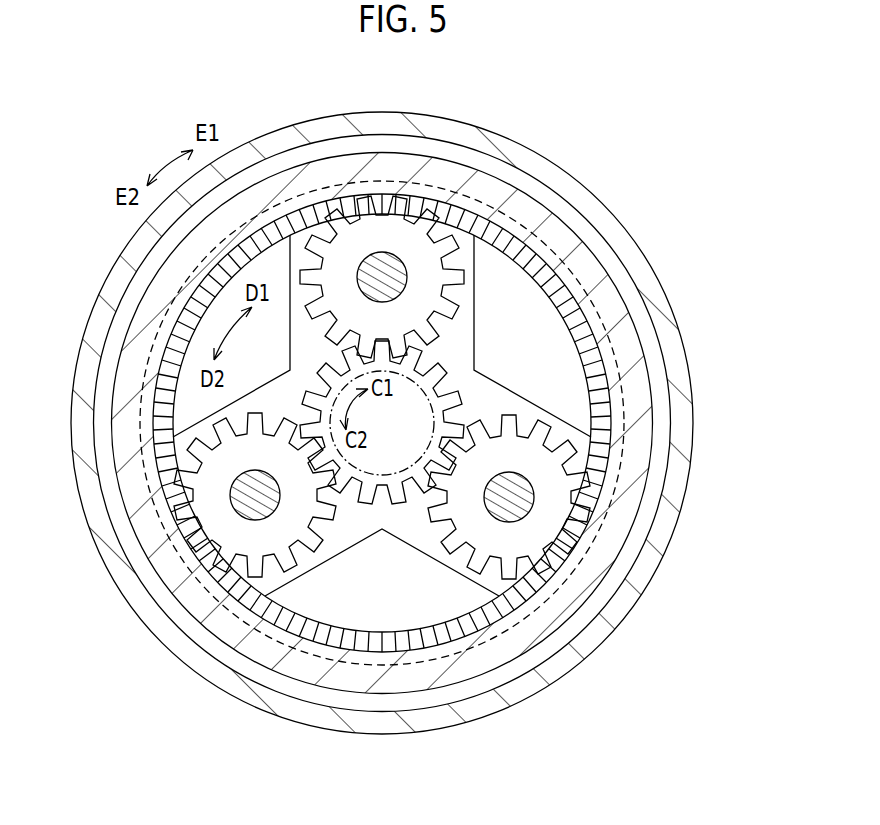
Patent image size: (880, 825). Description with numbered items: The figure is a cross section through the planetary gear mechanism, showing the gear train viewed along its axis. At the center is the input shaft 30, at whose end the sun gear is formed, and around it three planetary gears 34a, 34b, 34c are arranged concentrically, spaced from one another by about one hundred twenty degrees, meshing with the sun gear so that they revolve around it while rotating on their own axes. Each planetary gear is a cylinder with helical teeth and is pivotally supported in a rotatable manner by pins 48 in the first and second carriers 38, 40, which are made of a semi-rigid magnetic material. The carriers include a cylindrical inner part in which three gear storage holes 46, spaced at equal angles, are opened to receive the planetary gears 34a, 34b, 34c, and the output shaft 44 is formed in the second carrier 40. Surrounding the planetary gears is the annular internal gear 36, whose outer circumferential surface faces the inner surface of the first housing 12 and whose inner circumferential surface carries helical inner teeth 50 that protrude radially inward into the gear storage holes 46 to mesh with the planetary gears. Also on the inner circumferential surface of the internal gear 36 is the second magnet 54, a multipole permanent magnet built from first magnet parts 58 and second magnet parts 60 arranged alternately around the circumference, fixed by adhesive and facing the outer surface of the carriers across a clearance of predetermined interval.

The first housing 12 is at (488, 124).
The internal gear 36 is at (463, 682).
The second magnet 54 is at (515, 618).
The second magnet part 60 is at (295, 202).
The first magnet part 58 is at (120, 344).
The second carrier 40 is at (567, 359).
The first carrier 38 is at (458, 423).
The gear storage hole 46 is at (463, 315).
The output shaft 44 is at (368, 473).
The input shaft 30 is at (382, 472).
The planetary gear 34a is at (393, 228).
The planetary gear 34b is at (212, 527).
The planetary gear 34c is at (585, 520).
The pin 48 is at (375, 267).
The inner teeth 50 is at (280, 620).